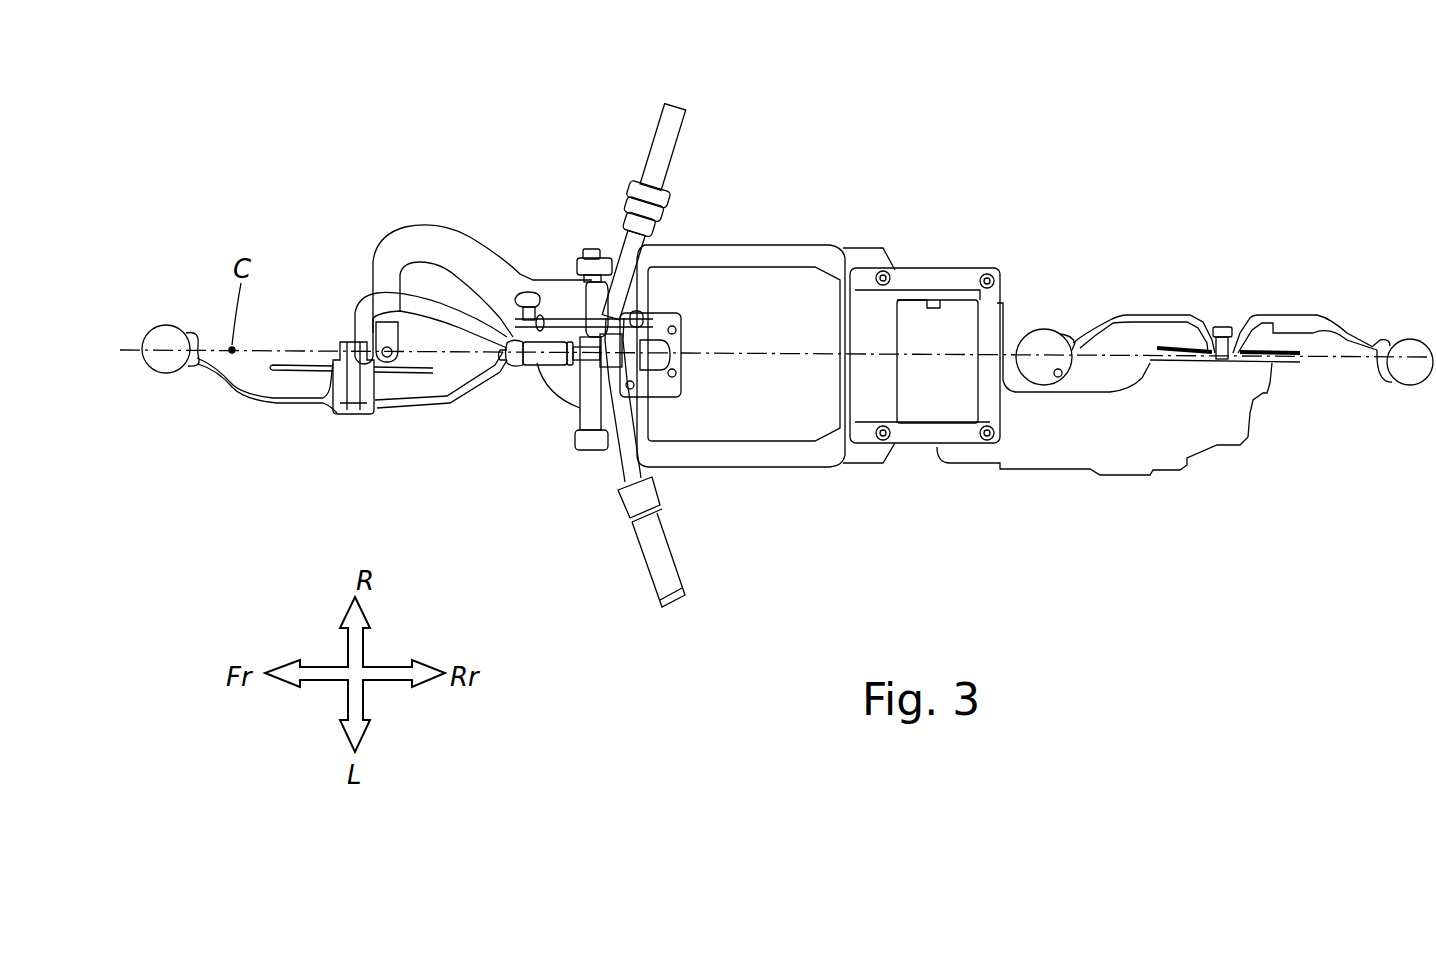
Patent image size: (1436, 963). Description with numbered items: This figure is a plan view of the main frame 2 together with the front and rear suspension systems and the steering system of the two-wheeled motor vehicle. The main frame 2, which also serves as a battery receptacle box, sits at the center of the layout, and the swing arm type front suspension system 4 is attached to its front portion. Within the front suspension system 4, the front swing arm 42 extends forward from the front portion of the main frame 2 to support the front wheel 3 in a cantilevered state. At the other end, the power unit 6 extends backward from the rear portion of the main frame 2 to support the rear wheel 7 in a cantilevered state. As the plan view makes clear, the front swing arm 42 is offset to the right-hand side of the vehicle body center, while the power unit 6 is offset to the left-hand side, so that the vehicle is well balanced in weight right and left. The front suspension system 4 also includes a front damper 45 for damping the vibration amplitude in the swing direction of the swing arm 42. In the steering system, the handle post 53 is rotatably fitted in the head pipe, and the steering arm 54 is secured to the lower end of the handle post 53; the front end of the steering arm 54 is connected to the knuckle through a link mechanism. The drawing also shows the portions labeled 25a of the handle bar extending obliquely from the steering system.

The main frame 2 is at (783, 253).
The front wheel 3 is at (238, 402).
The front suspension system 4 is at (540, 399).
The power unit 6 is at (1132, 452).
The rear wheel 7 is at (1317, 317).
The hose 25a is at (667, 133).
The front swing arm 42 is at (436, 240).
The front damper 45 is at (560, 303).
The handle post 53 is at (627, 243).
The steering arm 54 is at (358, 300).